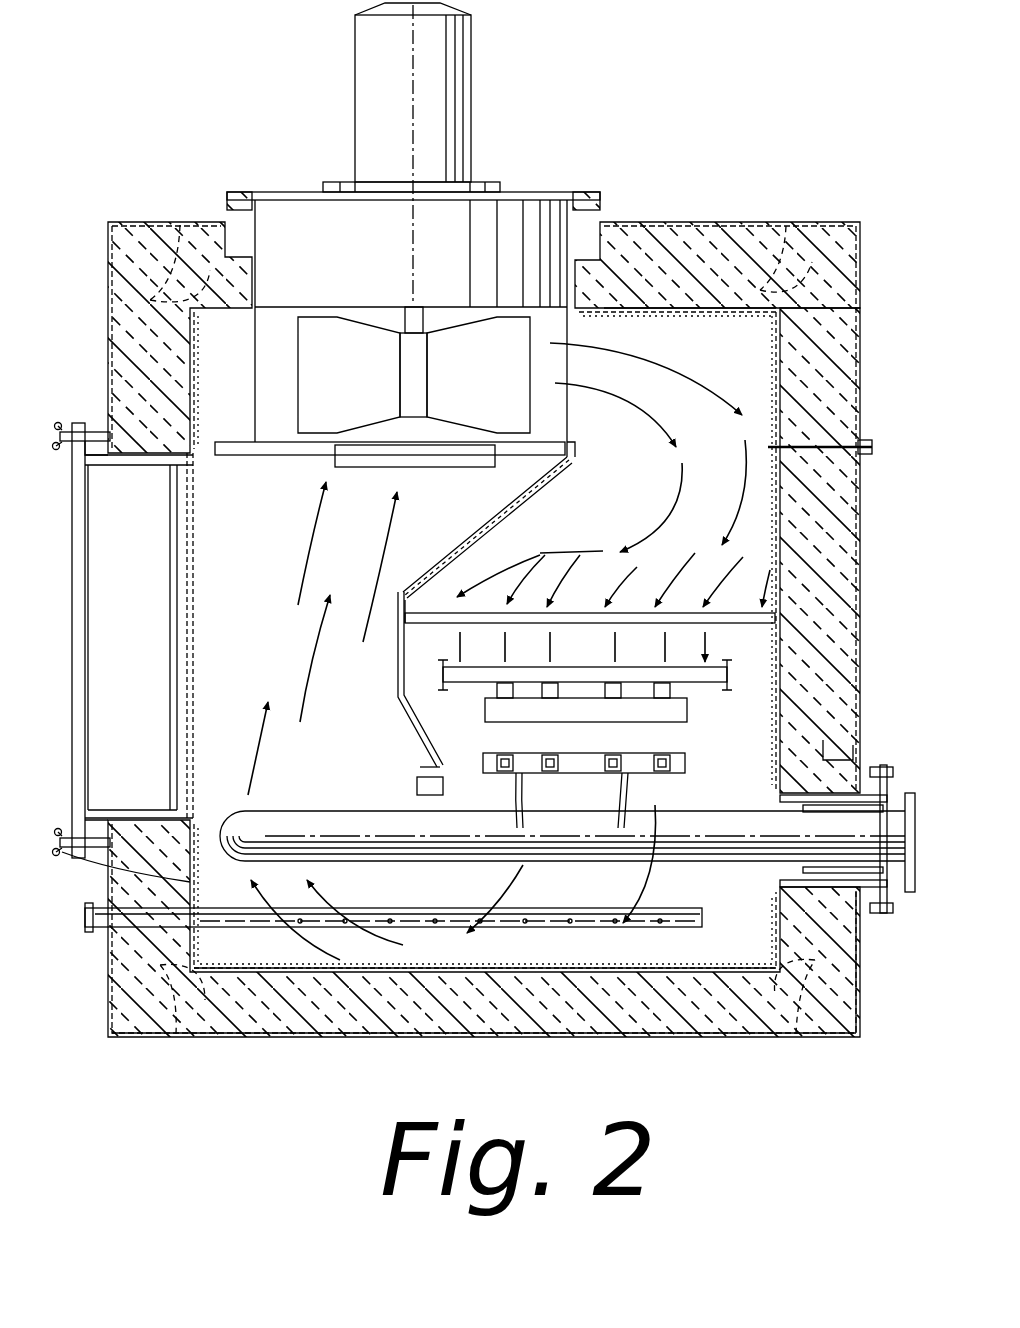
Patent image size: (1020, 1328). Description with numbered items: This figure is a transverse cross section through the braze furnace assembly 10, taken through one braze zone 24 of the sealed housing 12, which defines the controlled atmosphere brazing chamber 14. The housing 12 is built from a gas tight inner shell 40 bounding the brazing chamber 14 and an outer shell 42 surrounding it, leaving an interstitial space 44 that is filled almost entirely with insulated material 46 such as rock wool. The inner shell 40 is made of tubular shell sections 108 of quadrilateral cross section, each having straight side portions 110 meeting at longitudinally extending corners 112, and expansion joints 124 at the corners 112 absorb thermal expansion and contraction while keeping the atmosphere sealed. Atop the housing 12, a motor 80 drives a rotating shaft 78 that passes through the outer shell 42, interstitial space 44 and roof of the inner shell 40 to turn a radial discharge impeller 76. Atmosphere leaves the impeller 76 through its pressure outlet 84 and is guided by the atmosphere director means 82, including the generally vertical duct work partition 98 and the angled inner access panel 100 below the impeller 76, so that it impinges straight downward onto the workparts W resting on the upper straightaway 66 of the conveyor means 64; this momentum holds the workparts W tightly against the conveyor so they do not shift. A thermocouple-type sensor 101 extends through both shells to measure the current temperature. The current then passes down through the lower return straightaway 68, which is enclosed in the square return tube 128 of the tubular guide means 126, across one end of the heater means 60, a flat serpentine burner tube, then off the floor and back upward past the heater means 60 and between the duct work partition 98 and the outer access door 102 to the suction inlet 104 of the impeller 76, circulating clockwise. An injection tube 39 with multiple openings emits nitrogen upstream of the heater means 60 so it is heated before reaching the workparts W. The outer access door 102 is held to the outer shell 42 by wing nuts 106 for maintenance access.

The furnace assembly 10 is at (708, 170).
The housing 12 is at (858, 221).
The brazing chamber 14 is at (698, 306).
The braze zone 24 is at (285, 666).
The injection tube 39 is at (92, 928).
The inner shell 40 is at (605, 968).
The outer shell 42 is at (620, 1038).
The interstitial space 44 is at (706, 1038).
The insulated material 46 is at (450, 1038).
The heater means 60 is at (355, 862).
The conveyor means 64 is at (497, 690).
The upper straightaway 66 is at (680, 700).
The lower return straightaway 68 is at (663, 775).
The impeller 76 is at (330, 326).
The rotating shaft 78 is at (426, 318).
The motor 80 is at (468, 62).
The atmosphere director means 82 is at (762, 612).
The pressure outlet 84 is at (562, 400).
The duct work partition 98 is at (398, 600).
The inner access panel 100 is at (458, 545).
The thermocouple-type sensor 101 is at (805, 445).
The outer access door 102 is at (72, 600).
The suction inlet 104 is at (338, 466).
The wing nuts 106 is at (62, 425).
The tubular shell section 108 is at (700, 945).
The side portion 110 is at (672, 310).
The corner 112 is at (200, 312).
The expansion joint 124 is at (178, 224).
The tubular guide means 126 is at (495, 780).
The return tube 128 is at (581, 807).
The workparts W is at (727, 676).